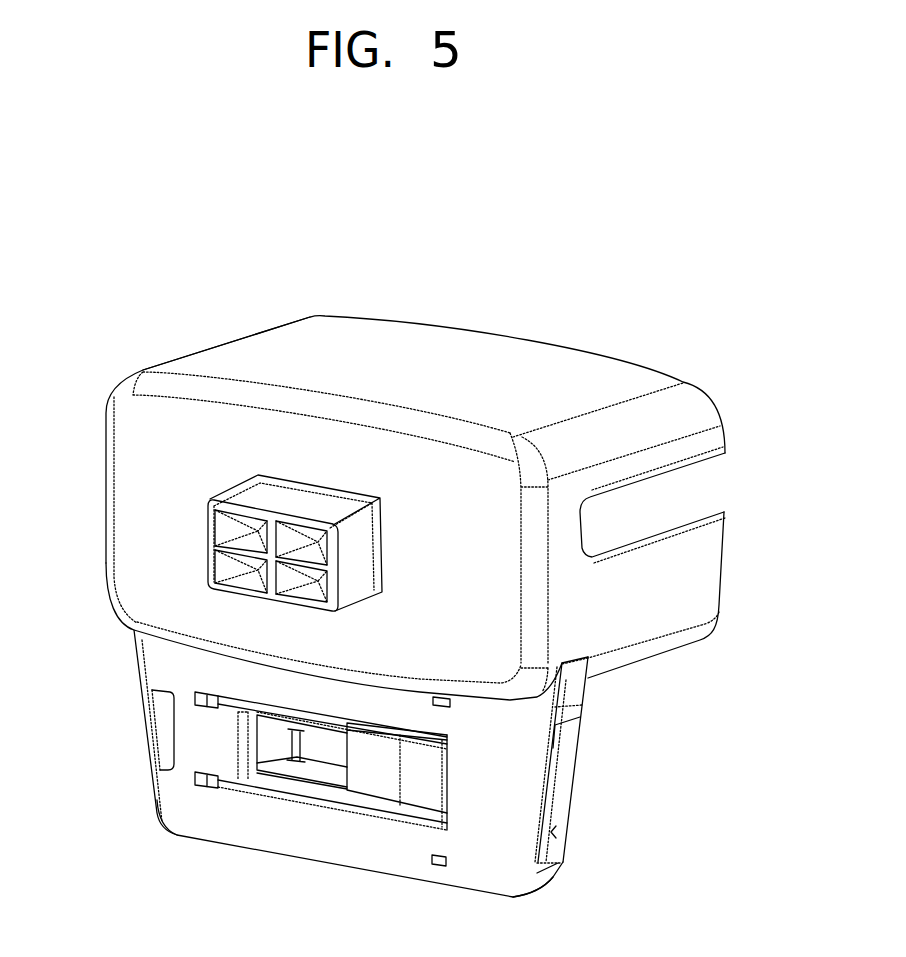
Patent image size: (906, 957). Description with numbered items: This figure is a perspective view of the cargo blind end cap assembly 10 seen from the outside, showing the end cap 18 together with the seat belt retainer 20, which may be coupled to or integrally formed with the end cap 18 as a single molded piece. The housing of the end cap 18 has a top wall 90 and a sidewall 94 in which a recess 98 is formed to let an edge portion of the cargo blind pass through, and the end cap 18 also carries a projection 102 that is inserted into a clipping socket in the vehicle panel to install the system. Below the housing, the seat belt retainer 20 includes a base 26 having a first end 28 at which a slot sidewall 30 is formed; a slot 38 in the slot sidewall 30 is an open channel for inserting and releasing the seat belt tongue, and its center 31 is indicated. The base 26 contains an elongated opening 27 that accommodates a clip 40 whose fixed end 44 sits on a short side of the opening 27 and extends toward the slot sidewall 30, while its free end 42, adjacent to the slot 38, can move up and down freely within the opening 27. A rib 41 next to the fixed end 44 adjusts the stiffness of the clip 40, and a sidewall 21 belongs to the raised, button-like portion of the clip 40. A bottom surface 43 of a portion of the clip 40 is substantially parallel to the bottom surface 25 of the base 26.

The cargo blind end cap assembly 10 is at (687, 236).
The end cap 18 is at (229, 343).
The top wall 90 is at (480, 345).
The recess 98 is at (705, 490).
The sidewall 94 is at (713, 572).
The projection 102 is at (206, 522).
The seat belt retainer 20 is at (150, 760).
The bottom surface 25 is at (170, 793).
The rib 41 is at (227, 693).
The fixed end 44 is at (221, 757).
The base 26 is at (251, 825).
The sidewall 21 is at (297, 780).
The opening 27 is at (320, 790).
The clip 40 is at (375, 781).
The bottom surface 43 is at (403, 787).
The free end 42 is at (436, 796).
The center 31 is at (558, 793).
The first end 28 is at (586, 707).
The slot 38 is at (557, 832).
The slot sidewall 30 is at (551, 877).